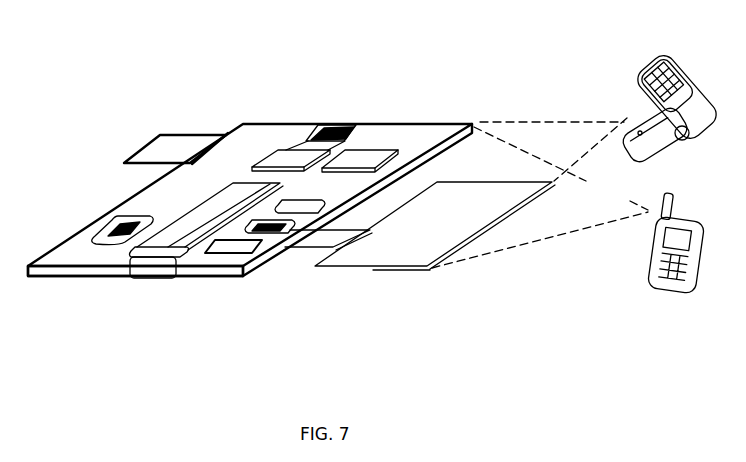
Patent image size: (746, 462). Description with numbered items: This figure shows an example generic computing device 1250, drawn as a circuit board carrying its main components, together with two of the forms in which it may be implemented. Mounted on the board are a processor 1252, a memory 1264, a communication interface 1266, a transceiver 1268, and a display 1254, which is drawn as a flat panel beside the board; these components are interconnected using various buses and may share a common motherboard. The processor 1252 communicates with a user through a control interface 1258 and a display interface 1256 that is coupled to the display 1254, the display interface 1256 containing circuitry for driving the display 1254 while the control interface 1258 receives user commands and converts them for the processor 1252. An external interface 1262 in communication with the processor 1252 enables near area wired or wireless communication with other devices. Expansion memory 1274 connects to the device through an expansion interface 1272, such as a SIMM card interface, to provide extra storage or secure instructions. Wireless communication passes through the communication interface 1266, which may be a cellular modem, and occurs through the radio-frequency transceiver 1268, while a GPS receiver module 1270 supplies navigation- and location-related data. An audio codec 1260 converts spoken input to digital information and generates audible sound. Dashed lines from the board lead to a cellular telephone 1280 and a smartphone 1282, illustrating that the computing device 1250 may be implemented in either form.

The computing device 1250 is at (229, 103).
The processor 1252 is at (178, 268).
The display 1254 is at (433, 268).
The display interface 1256 is at (253, 270).
The control interface 1258 is at (285, 247).
The audio codec 1260 is at (303, 242).
The external interface 1262 is at (155, 270).
The memory 1264 is at (102, 232).
The communication interface 1266 is at (288, 150).
The transceiver 1268 is at (360, 150).
The GPS receiver module 1270 is at (331, 122).
The expansion interface 1272 is at (223, 134).
The expansion memory 1274 is at (160, 134).
The cellular telephone 1280 is at (678, 68).
The smartphone 1282 is at (660, 194).